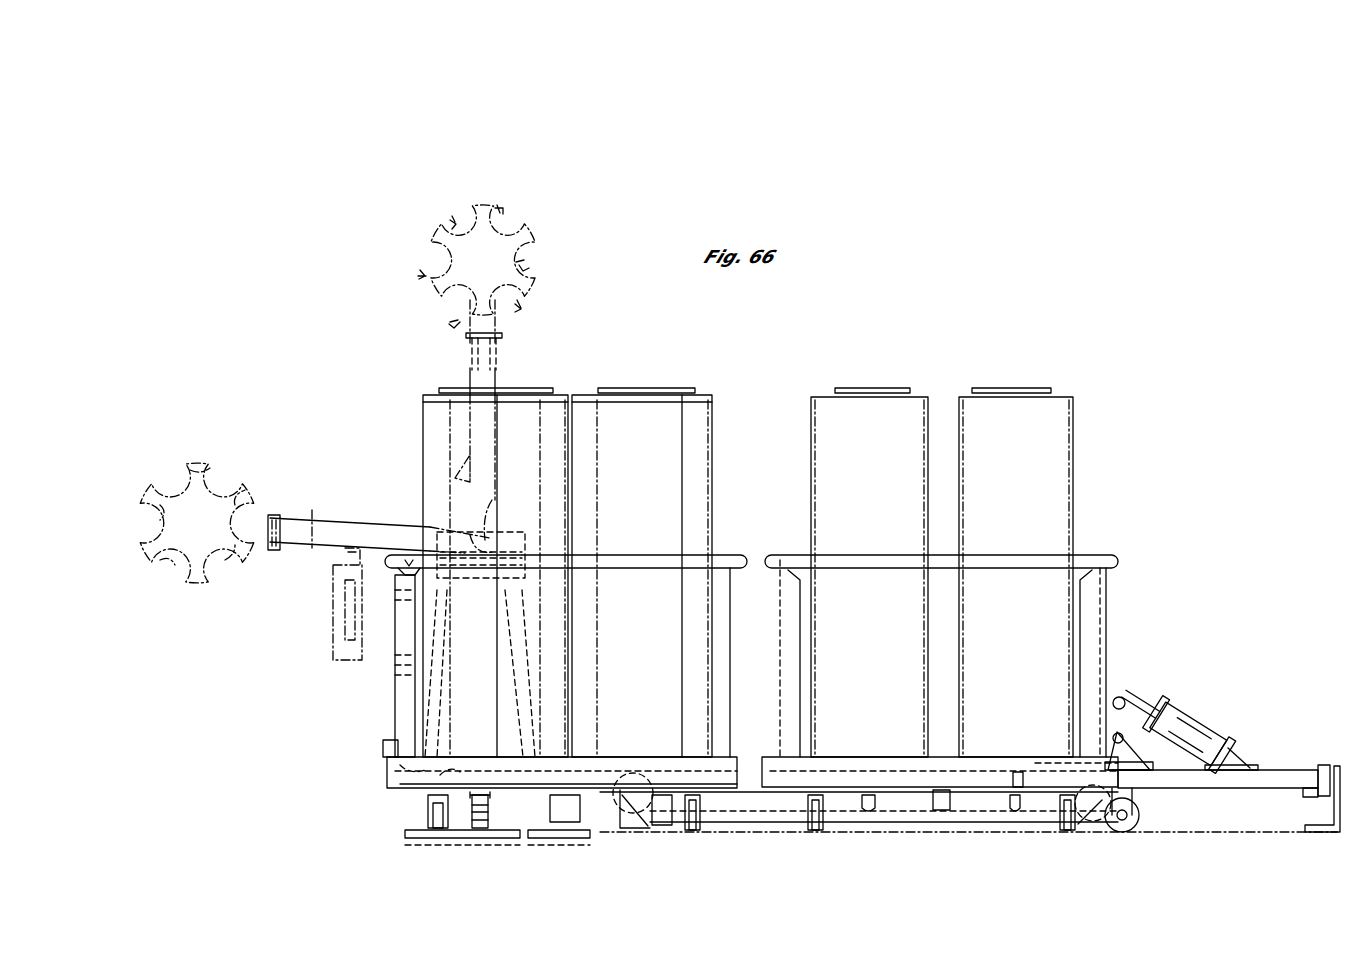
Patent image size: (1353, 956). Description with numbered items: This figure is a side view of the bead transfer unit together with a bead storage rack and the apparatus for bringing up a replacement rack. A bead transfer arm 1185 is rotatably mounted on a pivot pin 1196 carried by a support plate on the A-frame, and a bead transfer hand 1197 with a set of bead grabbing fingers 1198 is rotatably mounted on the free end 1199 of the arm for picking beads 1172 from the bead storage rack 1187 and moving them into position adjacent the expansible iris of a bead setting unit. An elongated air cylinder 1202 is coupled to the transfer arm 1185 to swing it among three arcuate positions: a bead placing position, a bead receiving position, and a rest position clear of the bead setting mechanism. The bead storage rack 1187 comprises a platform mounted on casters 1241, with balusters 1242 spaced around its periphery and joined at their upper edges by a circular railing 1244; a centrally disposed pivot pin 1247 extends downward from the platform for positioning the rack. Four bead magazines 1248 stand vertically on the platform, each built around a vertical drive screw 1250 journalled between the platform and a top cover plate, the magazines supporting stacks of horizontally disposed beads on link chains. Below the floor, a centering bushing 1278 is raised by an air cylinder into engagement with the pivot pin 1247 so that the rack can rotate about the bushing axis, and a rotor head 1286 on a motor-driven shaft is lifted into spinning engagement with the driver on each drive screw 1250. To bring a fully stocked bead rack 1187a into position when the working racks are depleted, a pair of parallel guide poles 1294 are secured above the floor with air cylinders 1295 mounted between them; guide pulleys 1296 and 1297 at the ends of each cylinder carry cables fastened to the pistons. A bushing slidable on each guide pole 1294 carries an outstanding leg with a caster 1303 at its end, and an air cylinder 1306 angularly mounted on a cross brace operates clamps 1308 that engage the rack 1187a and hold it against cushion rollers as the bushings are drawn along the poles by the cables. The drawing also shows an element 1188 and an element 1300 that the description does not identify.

The bead 1172 is at (240, 466).
The bead transfer arm 1185 is at (498, 382).
The bead storage rack 1187 is at (624, 384).
The fully stocked bead rack 1187a is at (864, 388).
The housing 1188 is at (534, 540).
The pivot pin 1196 is at (491, 512).
The bead transfer hand 1197 is at (536, 216).
The bead grabbing fingers 1198 is at (455, 222).
The free end 1199 is at (312, 520).
The elongated air cylinder 1202 is at (396, 698).
The casters 1241 is at (430, 812).
The balusters 1242 is at (778, 645).
The circular railing 1244 is at (778, 553).
The pivot pin 1247 is at (564, 792).
The bead magazines 1248 is at (434, 392).
The vertical drive screw 1250 is at (496, 792).
The bushing 1278 is at (585, 816).
The rotor head 1286 is at (495, 814).
The guide poles 1294 is at (845, 776).
The air cylinders 1295 is at (746, 833).
The guide pulleys 1296 is at (630, 776).
The guide pulleys 1297 is at (1100, 832).
The tongue beam 1300 is at (1259, 764).
The caster 1303 is at (1141, 812).
The air cylinder 1306 is at (1191, 720).
The clamps 1308 is at (1110, 722).